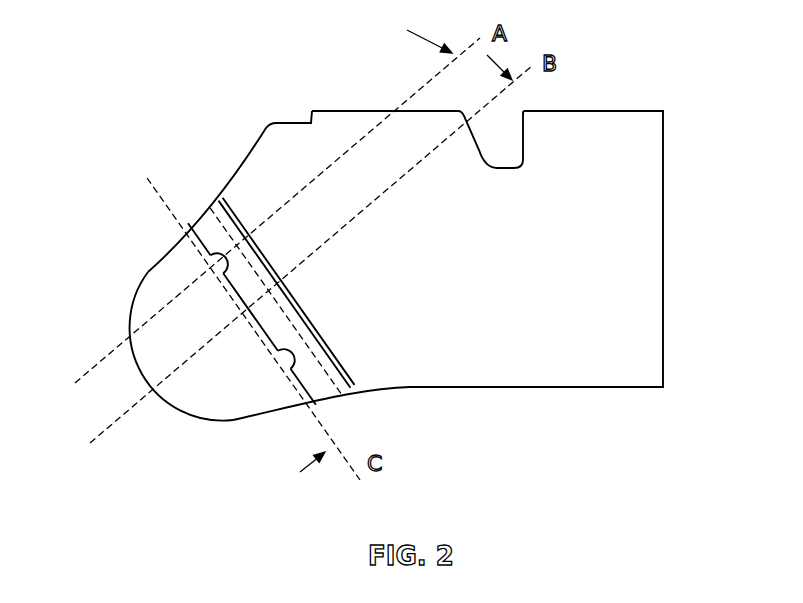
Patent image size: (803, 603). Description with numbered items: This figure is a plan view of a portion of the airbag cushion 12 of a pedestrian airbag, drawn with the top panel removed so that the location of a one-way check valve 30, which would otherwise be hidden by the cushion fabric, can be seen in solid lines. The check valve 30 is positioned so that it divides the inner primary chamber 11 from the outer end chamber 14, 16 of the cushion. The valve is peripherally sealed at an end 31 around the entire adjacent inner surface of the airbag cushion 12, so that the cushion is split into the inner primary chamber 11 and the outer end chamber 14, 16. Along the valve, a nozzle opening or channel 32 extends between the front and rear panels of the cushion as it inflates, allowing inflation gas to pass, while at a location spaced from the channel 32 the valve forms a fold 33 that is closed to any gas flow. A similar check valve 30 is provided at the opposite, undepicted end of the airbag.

The inner primary chamber 11 is at (316, 203).
The airbag cushion 12 is at (645, 109).
The outer end chamber 14 is at (141, 333).
The outer end chamber 16 is at (147, 273).
The one-way check valve 30 is at (203, 224).
The end 31 is at (225, 210).
The nozzle opening or channel 32 is at (218, 261).
The fold 33 is at (243, 306).